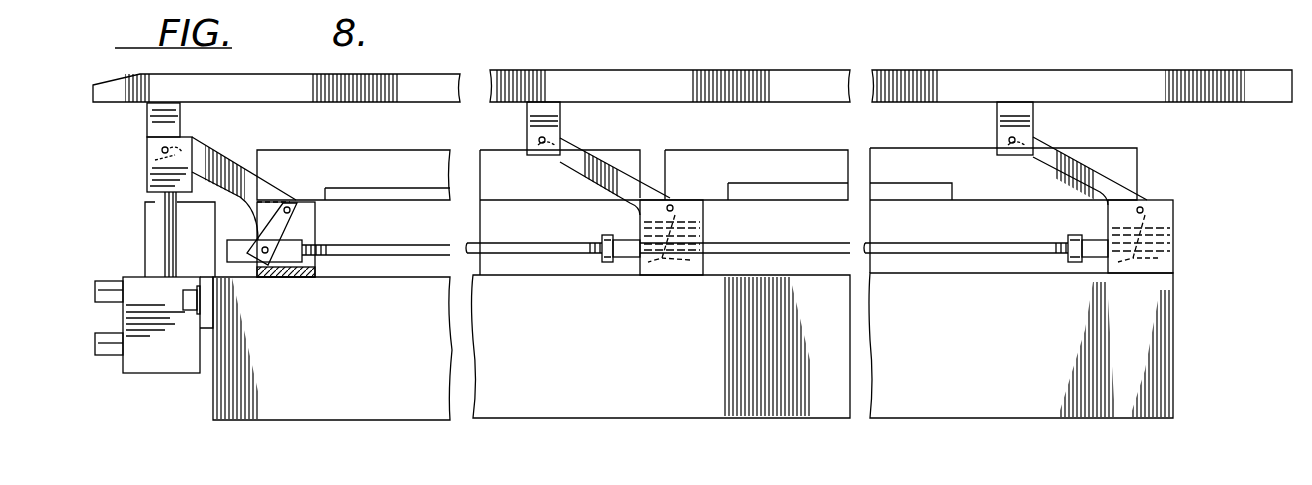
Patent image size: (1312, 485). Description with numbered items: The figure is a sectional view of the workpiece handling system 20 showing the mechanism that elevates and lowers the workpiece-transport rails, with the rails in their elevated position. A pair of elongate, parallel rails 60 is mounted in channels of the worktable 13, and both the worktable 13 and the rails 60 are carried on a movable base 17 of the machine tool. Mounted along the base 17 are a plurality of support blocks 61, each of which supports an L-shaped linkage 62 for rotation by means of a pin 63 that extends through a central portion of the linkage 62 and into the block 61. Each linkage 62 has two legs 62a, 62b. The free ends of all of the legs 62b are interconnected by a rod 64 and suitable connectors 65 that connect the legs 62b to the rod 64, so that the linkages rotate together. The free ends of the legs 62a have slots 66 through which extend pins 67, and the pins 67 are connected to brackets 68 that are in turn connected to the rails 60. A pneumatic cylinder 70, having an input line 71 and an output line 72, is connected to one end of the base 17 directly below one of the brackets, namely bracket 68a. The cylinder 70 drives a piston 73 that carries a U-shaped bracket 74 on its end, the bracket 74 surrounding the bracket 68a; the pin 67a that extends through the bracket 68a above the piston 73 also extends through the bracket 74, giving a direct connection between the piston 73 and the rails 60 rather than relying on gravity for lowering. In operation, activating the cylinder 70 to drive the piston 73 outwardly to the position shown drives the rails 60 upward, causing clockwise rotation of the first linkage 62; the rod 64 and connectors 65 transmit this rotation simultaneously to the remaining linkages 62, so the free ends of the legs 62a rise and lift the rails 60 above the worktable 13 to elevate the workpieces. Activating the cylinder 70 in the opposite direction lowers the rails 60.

The worktable 13 is at (745, 150).
The movable base 17 is at (346, 361).
The workpiece handling system 20 is at (1192, 46).
The rails 60 is at (423, 80).
The support blocks 61 is at (312, 219).
The L-shaped linkage 62 is at (222, 142).
The leg 62a is at (240, 167).
The leg 62b is at (278, 242).
The pin 63 is at (291, 208).
The rod 64 is at (525, 243).
The connectors 65 is at (233, 253).
The slots 66 is at (1035, 143).
The pins 67 is at (552, 136).
The pin 67a is at (165, 146).
The brackets 68 is at (540, 118).
The bracket 68a is at (157, 120).
The pneumatic cylinder 70 is at (160, 358).
The input line 71 is at (96, 289).
The output line 72 is at (96, 347).
The piston 73 is at (160, 235).
The U-shaped bracket 74 is at (160, 177).